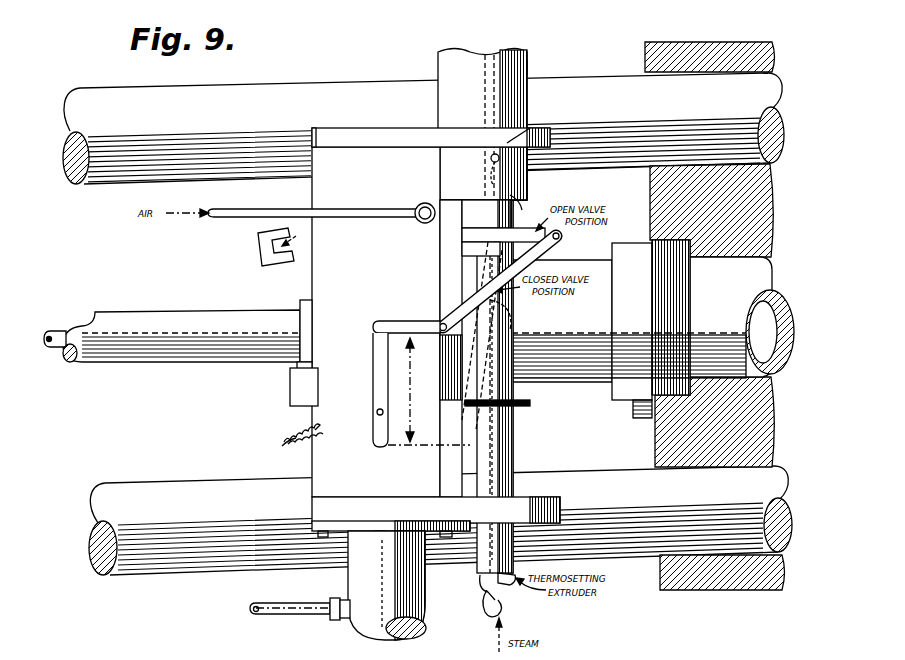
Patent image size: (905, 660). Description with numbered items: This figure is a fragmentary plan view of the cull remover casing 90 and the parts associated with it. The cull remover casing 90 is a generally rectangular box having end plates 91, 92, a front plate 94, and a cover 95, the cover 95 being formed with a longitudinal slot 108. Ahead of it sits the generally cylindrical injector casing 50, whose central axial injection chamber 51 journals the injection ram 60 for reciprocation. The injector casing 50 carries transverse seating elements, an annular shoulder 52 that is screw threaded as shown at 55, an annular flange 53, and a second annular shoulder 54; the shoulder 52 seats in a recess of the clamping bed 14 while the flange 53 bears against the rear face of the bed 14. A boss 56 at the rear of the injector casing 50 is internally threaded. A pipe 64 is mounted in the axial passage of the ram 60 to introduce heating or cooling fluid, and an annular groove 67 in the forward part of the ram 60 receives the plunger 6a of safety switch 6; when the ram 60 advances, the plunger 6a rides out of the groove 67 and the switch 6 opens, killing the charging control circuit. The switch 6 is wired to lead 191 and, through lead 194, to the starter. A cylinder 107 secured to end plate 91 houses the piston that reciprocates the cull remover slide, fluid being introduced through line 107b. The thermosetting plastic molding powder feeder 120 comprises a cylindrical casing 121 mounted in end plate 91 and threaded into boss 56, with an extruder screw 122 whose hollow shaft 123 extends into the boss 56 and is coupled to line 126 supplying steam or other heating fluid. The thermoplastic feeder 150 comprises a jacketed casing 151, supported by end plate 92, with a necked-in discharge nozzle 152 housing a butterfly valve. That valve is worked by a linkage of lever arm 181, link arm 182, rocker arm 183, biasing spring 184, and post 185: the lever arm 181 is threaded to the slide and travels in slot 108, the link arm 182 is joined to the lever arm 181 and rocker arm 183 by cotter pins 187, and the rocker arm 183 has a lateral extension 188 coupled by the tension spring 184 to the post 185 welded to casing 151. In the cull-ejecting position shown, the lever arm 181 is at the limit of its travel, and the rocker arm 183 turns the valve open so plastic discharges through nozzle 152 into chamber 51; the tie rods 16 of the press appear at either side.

The safety switch 6 is at (308, 394).
The plunger 6a is at (296, 366).
The clamping bed 14 is at (776, 400).
The tie rod 16 is at (247, 503).
The injector casing 50 is at (732, 299).
The injection chamber 51 is at (768, 306).
The annular shoulder 52 is at (690, 262).
The annular flange 53 is at (618, 250).
The second annular shoulder 54 is at (556, 321).
The threads 55 is at (633, 241).
The boss 56 is at (526, 404).
The injection ram 60 is at (190, 363).
The pipe 64 is at (52, 349).
The annular groove 67 is at (301, 306).
The cull-remover casing 90 is at (378, 251).
The end plate 91 is at (552, 500).
The end plate 92 is at (379, 128).
The front plate 94 is at (448, 234).
The cover 95 is at (312, 188).
The cylinder 107 is at (424, 608).
The fluid line 107b is at (292, 603).
The longitudinal slot 108 is at (377, 412).
The thermosetting plastic molding powder feeder 120 is at (518, 468).
The cylindrical casing 121 is at (513, 456).
The extruder screw 122 is at (518, 592).
The hollow shaft 123 is at (427, 624).
The line 126 is at (490, 620).
The thermoplastic feeder 150 is at (530, 70).
The jacketed casing 151 is at (480, 103).
The discharge nozzle 152 is at (478, 202).
The lever arm 181 is at (401, 320).
The link arm 182 is at (470, 295).
The rocker arm 183 is at (512, 228).
The biasing spring 184 is at (492, 159).
The post 185 is at (529, 127).
The cotter pins 187 is at (560, 240).
The lateral extension 188 is at (521, 202).
The lead 191 is at (282, 434).
The lead 194 is at (292, 440).